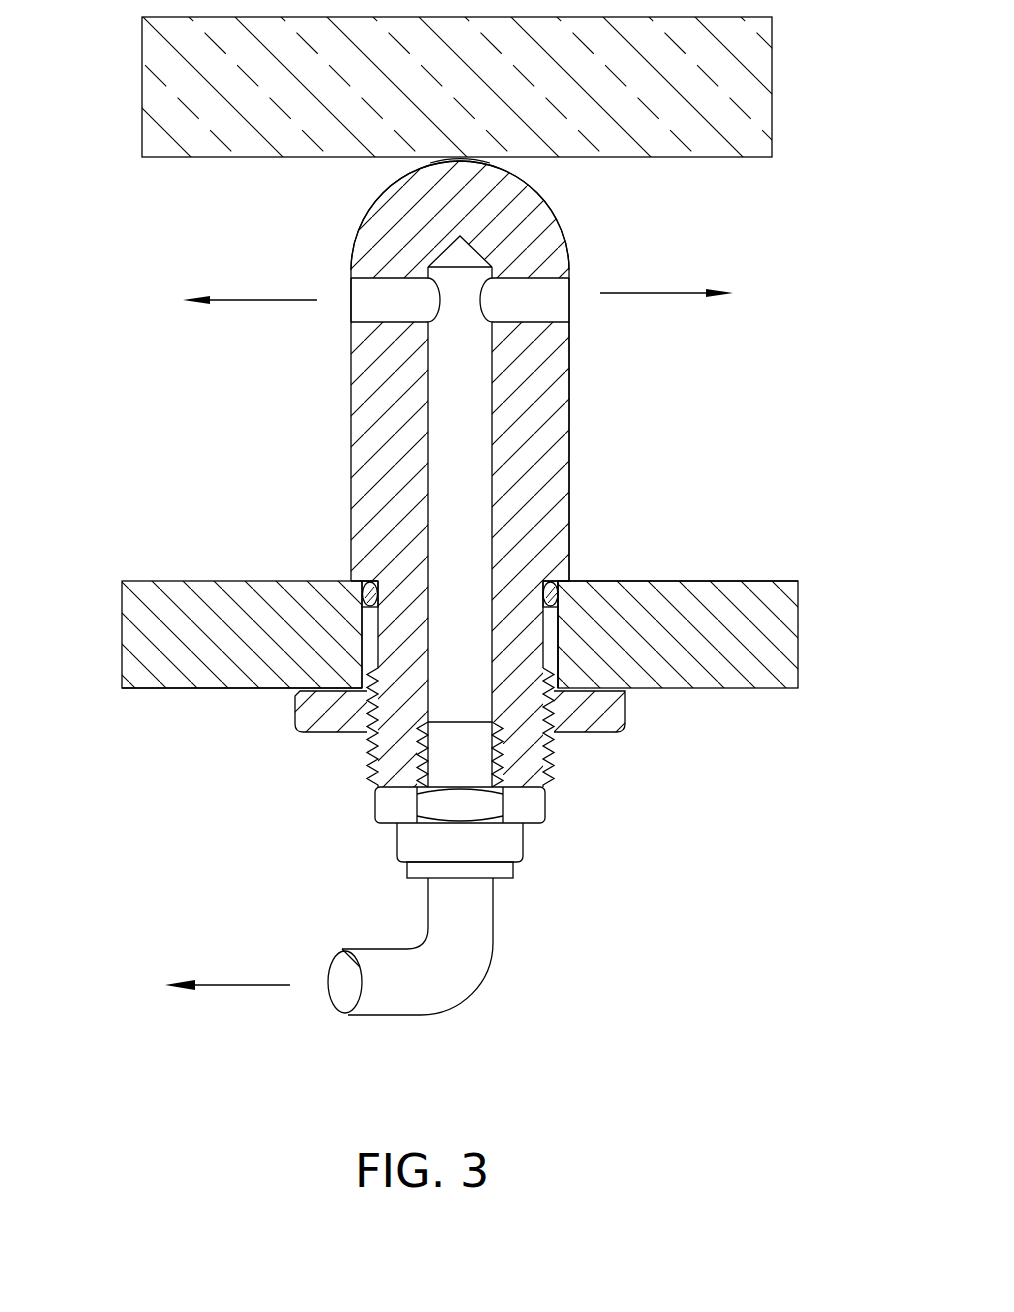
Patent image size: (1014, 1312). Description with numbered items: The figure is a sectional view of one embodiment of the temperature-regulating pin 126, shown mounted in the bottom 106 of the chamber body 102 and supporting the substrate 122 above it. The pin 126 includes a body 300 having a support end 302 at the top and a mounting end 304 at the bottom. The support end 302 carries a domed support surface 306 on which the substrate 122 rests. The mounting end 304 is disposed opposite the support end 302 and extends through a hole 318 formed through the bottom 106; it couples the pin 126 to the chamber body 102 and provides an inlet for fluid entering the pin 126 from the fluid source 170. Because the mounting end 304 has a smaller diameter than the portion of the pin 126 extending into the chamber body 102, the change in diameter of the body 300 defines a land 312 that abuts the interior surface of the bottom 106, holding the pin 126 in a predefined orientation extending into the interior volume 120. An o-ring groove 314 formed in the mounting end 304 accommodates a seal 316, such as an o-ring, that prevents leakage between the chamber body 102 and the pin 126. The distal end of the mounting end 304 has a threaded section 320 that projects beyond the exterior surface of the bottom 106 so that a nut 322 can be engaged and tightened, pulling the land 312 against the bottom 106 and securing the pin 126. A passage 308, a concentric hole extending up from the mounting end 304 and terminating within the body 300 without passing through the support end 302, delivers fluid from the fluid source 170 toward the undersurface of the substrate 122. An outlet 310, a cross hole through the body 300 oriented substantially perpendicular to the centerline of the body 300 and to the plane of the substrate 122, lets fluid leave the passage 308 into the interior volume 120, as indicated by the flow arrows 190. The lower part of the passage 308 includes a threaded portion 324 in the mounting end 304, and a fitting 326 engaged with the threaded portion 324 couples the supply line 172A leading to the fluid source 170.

The chamber body 102 is at (175, 690).
The bottom of the chamber body 106 is at (180, 592).
The interior volume 120 is at (193, 460).
The substrate 122 is at (733, 25).
The temperature-regulating pin 126 is at (578, 423).
The fluid source 170 is at (155, 991).
The supply line 172A is at (447, 984).
The flow arrows 190 is at (273, 300).
The body 300 is at (362, 453).
The support end 302 is at (510, 188).
The mounting end 304 is at (577, 640).
The support surface 306 is at (457, 165).
The passage 308 is at (450, 412).
The outlet 310 is at (570, 283).
The land 312 is at (572, 580).
The o-ring groove 314 is at (378, 581).
The seal 316 is at (560, 582).
The hole 318 is at (353, 683).
The threaded section 320 is at (367, 740).
The nut 322 is at (292, 710).
The threaded portion 324 is at (508, 733).
The fitting 326 is at (376, 805).